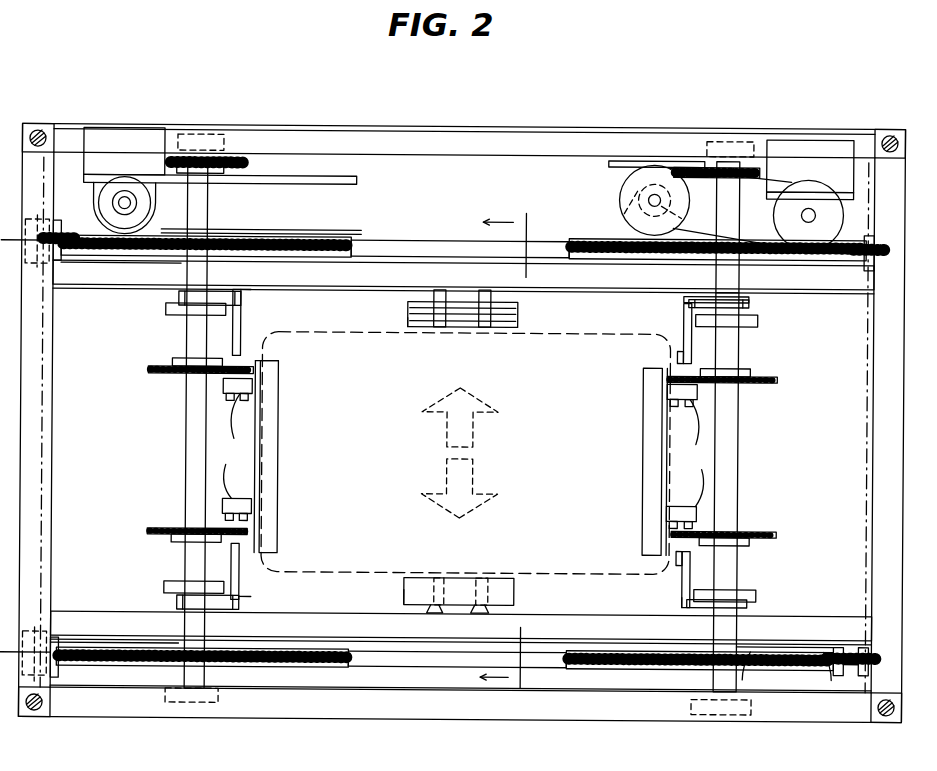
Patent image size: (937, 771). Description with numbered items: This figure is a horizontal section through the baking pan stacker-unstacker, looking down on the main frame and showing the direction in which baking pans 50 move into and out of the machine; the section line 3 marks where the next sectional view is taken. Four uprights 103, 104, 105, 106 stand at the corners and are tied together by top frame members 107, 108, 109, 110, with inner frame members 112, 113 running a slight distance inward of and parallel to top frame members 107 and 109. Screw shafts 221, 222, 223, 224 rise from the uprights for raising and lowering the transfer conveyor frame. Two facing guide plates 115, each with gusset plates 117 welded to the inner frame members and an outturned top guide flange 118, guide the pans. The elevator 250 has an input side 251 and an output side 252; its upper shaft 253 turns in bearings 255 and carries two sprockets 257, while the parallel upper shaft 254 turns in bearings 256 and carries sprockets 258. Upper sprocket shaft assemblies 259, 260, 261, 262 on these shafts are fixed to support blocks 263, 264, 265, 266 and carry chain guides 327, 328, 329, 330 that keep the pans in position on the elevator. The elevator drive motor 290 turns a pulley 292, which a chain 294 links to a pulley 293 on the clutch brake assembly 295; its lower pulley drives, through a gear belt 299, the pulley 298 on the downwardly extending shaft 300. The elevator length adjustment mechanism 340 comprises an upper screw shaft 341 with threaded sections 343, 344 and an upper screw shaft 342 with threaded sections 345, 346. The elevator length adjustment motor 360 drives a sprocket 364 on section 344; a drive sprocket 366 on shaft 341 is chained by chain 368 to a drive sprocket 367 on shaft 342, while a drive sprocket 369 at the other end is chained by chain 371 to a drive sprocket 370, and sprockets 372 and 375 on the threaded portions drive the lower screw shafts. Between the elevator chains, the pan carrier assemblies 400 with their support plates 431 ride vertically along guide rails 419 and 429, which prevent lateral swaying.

The baking pan 50 is at (358, 332).
The upright 103 is at (30, 722).
The upright 104 is at (38, 124).
The upright 105 is at (894, 722).
The upright 106 is at (893, 126).
The top frame member 107 is at (410, 720).
The top frame member 108 is at (52, 490).
The top frame member 109 is at (478, 132).
The top frame member 110 is at (872, 520).
The inner frame member 112 is at (98, 614).
The inner frame member 113 is at (124, 290).
The guide plate 115 is at (522, 326).
The gusset plate 117 is at (484, 292).
The top guide flange 118 is at (408, 320).
The screw shaft 221 is at (42, 710).
The screw shaft 222 is at (45, 138).
The screw shaft 223 is at (884, 714).
The screw shaft 224 is at (880, 138).
The elevator 250 is at (172, 438).
The input side 251 is at (606, 600).
The output side 252 is at (604, 300).
The upper shaft 253 is at (192, 486).
The upper shaft 254 is at (737, 498).
The bearing 255 is at (222, 135).
The bearing 256 is at (726, 140).
The sprocket 257 is at (150, 370).
The sprocket 258 is at (778, 376).
The upper sprocket shaft assembly 259 is at (248, 592).
The upper sprocket shaft assembly 260 is at (680, 590).
The upper sprocket shaft assembly 261 is at (250, 306).
The upper sprocket shaft assembly 262 is at (679, 318).
The support block 263 is at (175, 590).
The support block 264 is at (757, 595).
The support block 265 is at (166, 312).
The support block 266 is at (758, 318).
The elevator drive motor 290 is at (626, 196).
The pulley 292 is at (628, 214).
The pulley 293 is at (816, 193).
The chain 294 is at (704, 162).
The clutch brake assembly 295 is at (782, 143).
The pulley 298 is at (92, 190).
The gear belt 299 is at (324, 186).
The shaft 300 is at (124, 200).
The chain guide 327 is at (242, 568).
The chain guide 328 is at (680, 568).
The chain guide 329 is at (244, 344).
The chain guide 330 is at (678, 354).
The elevator length adjustment mechanism 340 is at (348, 672).
The upper screw shaft 341 is at (404, 666).
The upper screw shaft 342 is at (450, 243).
The threaded section 343 is at (292, 666).
The threaded section 344 is at (610, 666).
The threaded section 345 is at (278, 240).
The threaded section 346 is at (660, 258).
The elevator length adjustment motor 360 is at (749, 678).
The sprocket 364 is at (842, 638).
The drive sprocket 366 is at (864, 670).
The drive sprocket 367 is at (868, 276).
The chain 368 is at (864, 458).
The drive sprocket 369 is at (58, 644).
The drive sprocket 370 is at (54, 208).
The chain 371 is at (44, 418).
The sprocket 372 is at (58, 670).
The sprocket 375 is at (64, 264).
The pan carrier assembly 400 is at (280, 472).
The guide rail 419 is at (235, 449).
The guide rail 429 is at (690, 456).
The support plate 431 is at (280, 412).
The section line 3 is at (519, 452).